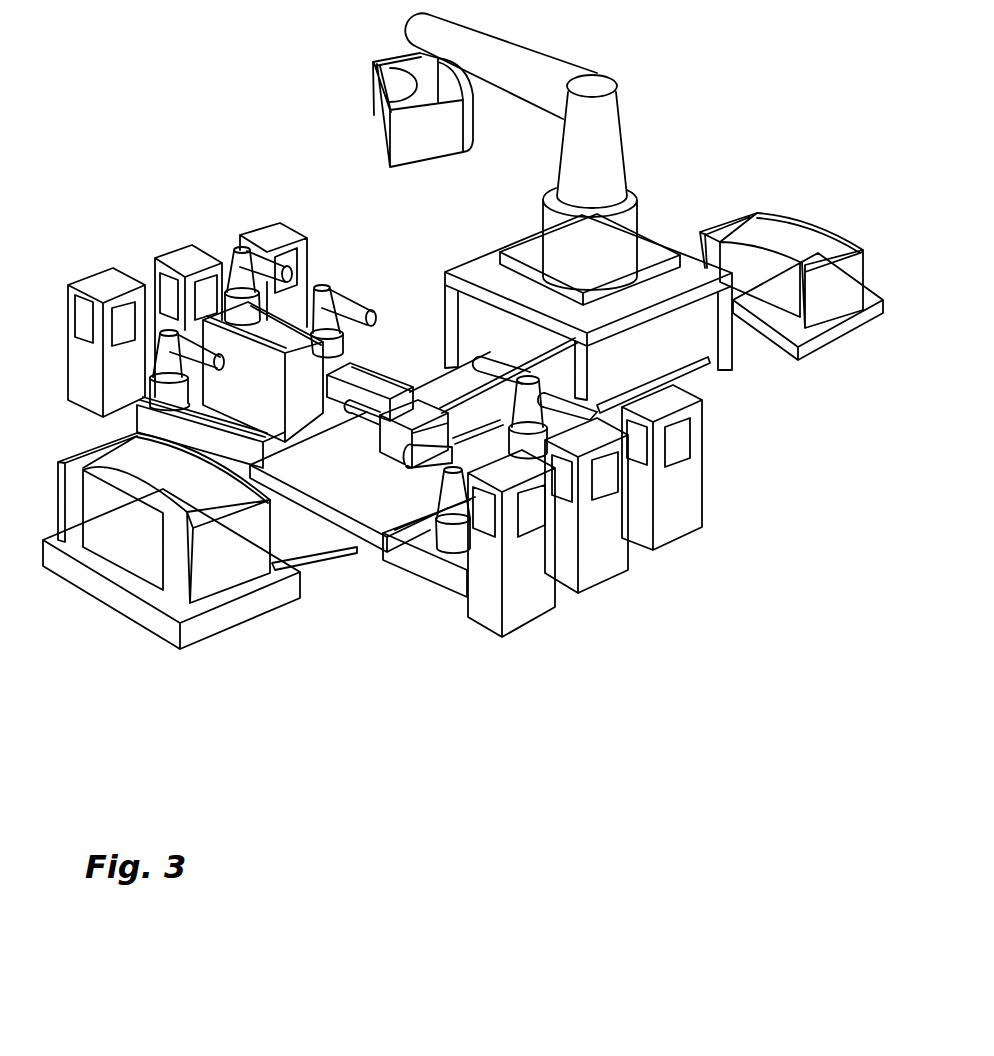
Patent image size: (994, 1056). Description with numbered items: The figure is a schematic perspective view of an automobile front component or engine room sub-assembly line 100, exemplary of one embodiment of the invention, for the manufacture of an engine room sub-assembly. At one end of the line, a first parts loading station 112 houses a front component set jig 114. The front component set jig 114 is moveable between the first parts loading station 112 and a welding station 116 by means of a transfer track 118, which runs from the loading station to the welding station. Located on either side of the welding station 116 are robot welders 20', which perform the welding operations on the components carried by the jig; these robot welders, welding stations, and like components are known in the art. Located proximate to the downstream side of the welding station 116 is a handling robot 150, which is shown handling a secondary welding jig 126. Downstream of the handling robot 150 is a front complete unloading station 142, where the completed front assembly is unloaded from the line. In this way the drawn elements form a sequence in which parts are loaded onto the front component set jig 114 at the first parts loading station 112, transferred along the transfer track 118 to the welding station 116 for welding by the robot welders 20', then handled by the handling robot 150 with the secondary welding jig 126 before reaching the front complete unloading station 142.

The engine room sub-assembly line 100 is at (132, 158).
The handling robot 150 is at (612, 134).
The secondary welding jig 126 is at (388, 160).
The front complete unloading station 142 is at (848, 226).
The first parts loading station 112 is at (98, 611).
The front component set jig 114 is at (226, 574).
The transfer track 118 is at (320, 562).
The welding station 116 is at (380, 477).
The robot welders 20' is at (385, 445).